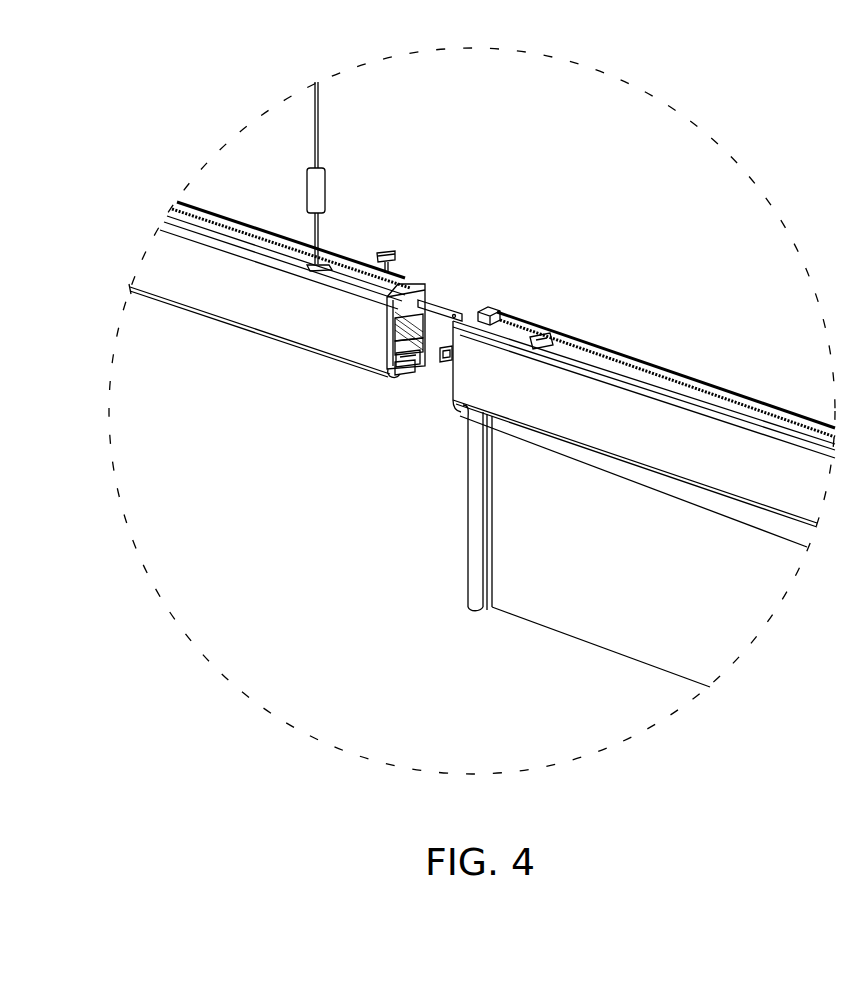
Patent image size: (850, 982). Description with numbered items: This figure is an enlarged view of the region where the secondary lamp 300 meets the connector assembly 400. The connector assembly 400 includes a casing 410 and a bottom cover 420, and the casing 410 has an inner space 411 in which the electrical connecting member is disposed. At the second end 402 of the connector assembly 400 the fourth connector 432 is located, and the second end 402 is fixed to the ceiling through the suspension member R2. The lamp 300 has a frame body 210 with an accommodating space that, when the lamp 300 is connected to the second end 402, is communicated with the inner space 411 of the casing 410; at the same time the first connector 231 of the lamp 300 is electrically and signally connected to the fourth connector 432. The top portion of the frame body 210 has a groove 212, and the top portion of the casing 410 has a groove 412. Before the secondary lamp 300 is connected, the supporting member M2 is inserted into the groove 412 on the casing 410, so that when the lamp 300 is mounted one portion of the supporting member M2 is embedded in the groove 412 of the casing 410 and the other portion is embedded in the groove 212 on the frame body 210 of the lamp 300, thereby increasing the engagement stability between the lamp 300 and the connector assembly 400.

The suspension member R2 is at (323, 224).
The connector assembly 400 is at (338, 243).
The casing 410 is at (213, 316).
The bottom cover 420 is at (281, 342).
The second end 402 is at (410, 283).
The groove 412 is at (358, 270).
The fourth connector 432 is at (412, 358).
The inner space 411 is at (402, 372).
The supporting member M2 is at (440, 310).
The first connector 231 is at (454, 358).
The frame body 210 is at (690, 383).
The lamp 300 is at (510, 307).
The groove 212 is at (530, 327).